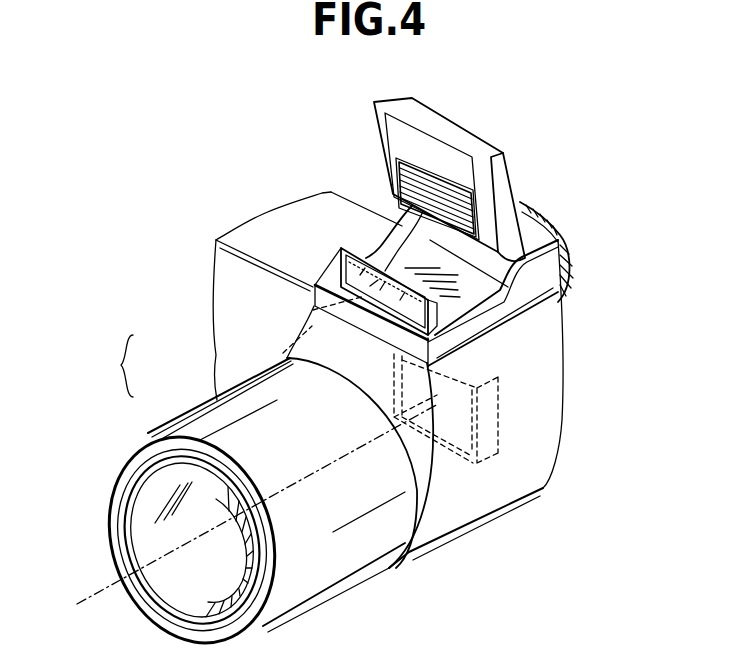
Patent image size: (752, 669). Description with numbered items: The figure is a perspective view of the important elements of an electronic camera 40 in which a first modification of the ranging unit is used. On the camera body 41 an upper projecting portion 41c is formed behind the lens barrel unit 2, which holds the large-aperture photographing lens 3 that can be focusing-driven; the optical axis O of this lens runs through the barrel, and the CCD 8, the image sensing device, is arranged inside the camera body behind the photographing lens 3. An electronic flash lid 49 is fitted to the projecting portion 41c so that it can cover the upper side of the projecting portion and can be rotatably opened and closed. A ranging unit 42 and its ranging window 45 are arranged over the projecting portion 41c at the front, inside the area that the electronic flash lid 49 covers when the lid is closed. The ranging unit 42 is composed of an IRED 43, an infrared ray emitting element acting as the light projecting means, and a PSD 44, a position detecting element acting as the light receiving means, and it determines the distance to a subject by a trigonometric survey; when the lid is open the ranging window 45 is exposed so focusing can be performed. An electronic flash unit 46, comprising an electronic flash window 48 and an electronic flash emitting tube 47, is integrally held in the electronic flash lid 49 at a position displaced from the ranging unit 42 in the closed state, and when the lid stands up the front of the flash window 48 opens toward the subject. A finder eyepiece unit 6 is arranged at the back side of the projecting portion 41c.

The lens barrel unit 2 is at (325, 572).
The photographing lens 3 is at (143, 512).
The optical axis O is at (97, 598).
The finder eyepiece unit 6 is at (558, 220).
The CCD 8 is at (501, 412).
The electronic camera 40 is at (224, 208).
The camera body 41 is at (526, 453).
The upper projecting portion 41c is at (495, 323).
The ranging unit 42 is at (106, 366).
The IRED 43 is at (283, 353).
The PSD 44 is at (313, 310).
The ranging window 45 is at (341, 267).
The electronic flash unit 46 is at (313, 60).
The electronic flash emitting tube 47 is at (492, 207).
The electronic flash window 48 is at (386, 150).
The electronic flash lid 49 is at (348, 228).